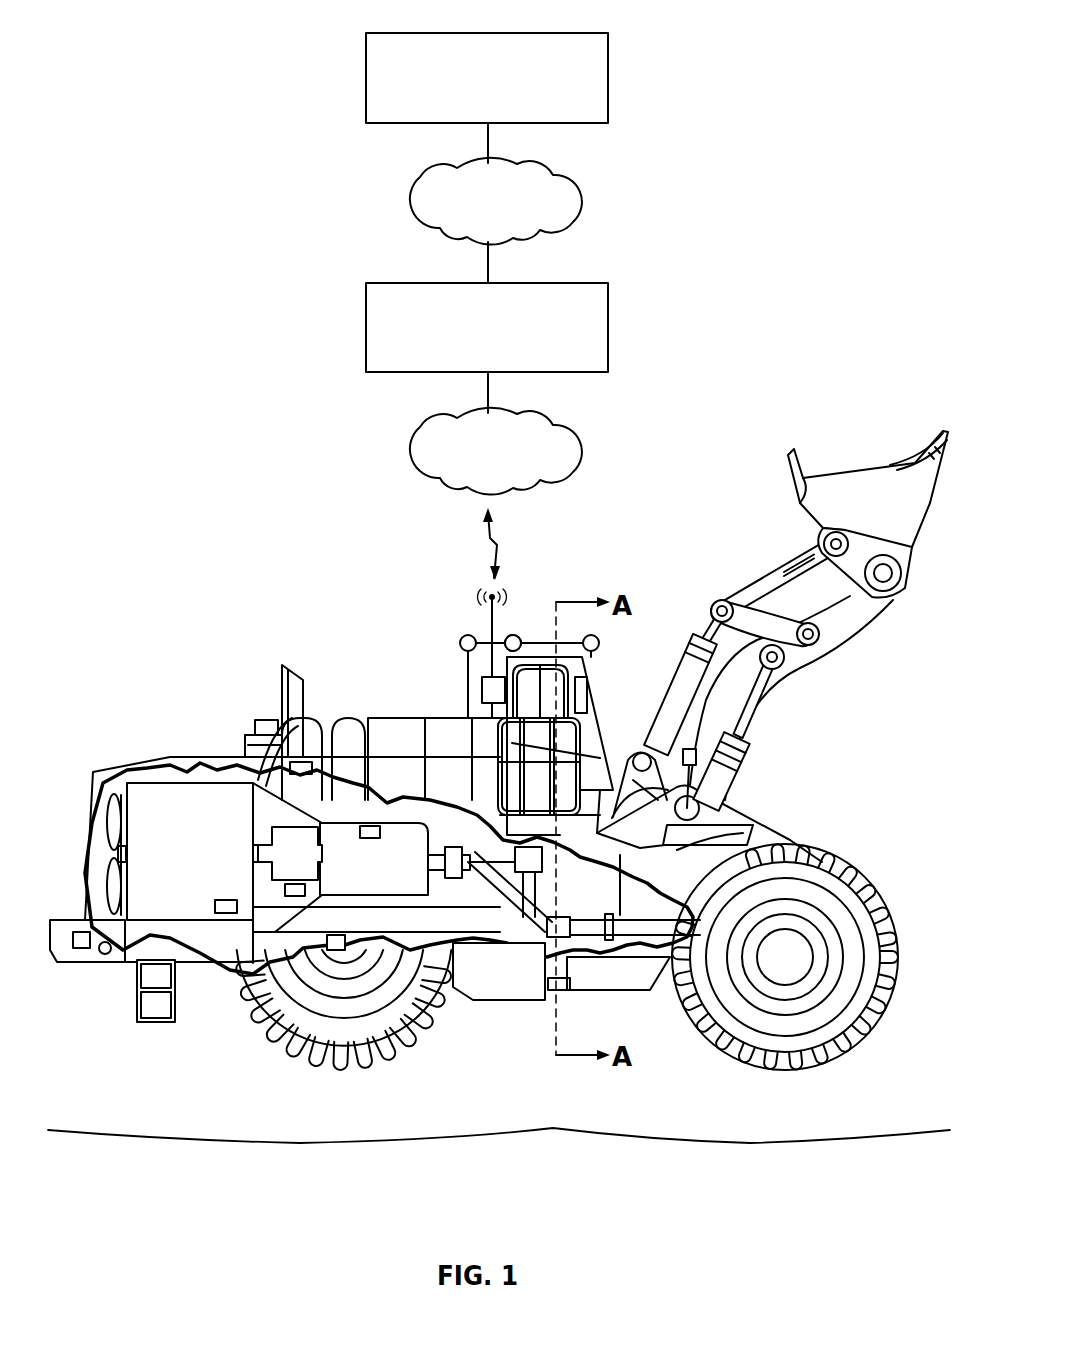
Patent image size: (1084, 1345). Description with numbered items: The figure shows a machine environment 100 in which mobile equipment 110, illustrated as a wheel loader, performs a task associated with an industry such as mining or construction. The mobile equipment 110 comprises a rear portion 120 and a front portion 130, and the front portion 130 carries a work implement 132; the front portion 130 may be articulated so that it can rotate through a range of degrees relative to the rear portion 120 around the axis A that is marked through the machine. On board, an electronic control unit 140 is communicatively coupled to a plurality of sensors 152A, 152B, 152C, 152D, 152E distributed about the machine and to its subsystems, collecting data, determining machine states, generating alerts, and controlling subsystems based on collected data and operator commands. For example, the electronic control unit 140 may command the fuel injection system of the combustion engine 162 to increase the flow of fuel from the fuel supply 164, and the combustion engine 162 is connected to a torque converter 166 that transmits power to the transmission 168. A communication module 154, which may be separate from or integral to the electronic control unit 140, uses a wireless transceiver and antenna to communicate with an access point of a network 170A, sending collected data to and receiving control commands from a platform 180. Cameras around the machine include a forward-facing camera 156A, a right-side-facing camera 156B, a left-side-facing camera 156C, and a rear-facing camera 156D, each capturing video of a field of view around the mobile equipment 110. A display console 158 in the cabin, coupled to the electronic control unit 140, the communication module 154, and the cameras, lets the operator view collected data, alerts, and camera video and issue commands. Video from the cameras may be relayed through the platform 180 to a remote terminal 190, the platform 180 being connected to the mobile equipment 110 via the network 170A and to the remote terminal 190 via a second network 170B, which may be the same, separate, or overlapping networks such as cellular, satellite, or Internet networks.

The machine environment 100 is at (792, 106).
The mobile equipment 110 is at (499, 805).
The rear portion 120 is at (344, 1064).
The front portion 130 is at (785, 1011).
The work implement 132 is at (892, 521).
The electronic control unit 140 is at (525, 915).
The sensor 152A is at (372, 826).
The sensor 152B is at (215, 906).
The sensor 152C is at (760, 838).
The sensor 152D is at (336, 950).
The sensor 152E is at (280, 888).
The communication module 154 is at (482, 690).
The forward-facing camera 156A is at (598, 641).
The right-side-facing camera 156B is at (517, 636).
The left-side-facing camera 156C is at (517, 636).
The rear-facing camera 156D is at (466, 634).
The display console 158 is at (586, 700).
The combustion engine 162 is at (207, 842).
The fuel supply 164 is at (235, 938).
The torque converter 166 is at (287, 827).
The transmission 168 is at (392, 881).
The network 170A is at (586, 450).
The network 170B is at (586, 200).
The platform 180 is at (437, 282).
The remote terminal 190 is at (437, 32).